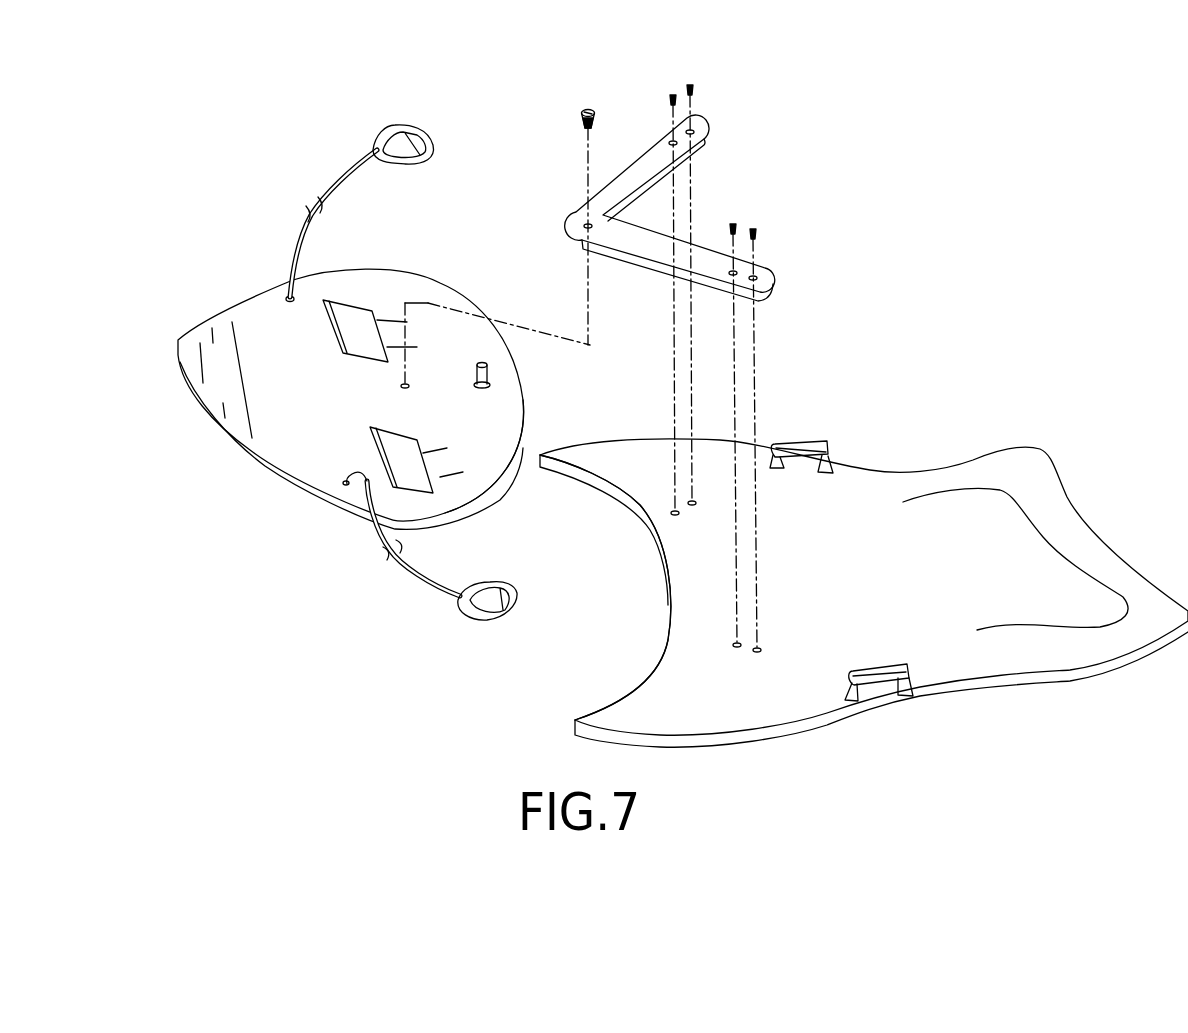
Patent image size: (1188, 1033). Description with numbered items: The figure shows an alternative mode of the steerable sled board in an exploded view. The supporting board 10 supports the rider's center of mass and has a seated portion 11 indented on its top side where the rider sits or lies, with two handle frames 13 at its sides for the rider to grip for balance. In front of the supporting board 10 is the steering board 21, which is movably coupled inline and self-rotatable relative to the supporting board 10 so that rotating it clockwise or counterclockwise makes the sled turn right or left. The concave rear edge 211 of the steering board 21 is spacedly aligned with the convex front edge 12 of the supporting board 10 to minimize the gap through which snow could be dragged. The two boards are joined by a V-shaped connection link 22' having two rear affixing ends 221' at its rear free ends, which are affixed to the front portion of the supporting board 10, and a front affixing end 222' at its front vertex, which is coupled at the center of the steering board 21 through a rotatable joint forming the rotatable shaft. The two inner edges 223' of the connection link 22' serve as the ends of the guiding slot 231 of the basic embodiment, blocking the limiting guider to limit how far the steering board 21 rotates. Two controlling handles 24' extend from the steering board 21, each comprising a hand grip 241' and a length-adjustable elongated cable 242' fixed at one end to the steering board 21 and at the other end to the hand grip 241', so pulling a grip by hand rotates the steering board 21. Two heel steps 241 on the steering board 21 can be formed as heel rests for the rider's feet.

The supporting board 10 is at (937, 473).
The seated portion 11 is at (1042, 560).
The convex front edge 12 is at (633, 603).
The handle frames 13 is at (784, 447).
The steering board 21 is at (284, 421).
The concave rear edge 211 is at (537, 438).
The guiding slot 231 is at (490, 365).
The heel steps 241 is at (453, 349).
The connection link 22' is at (729, 185).
The rear affixing end 221' is at (761, 345).
The front affixing end 222' is at (548, 228).
The inner edges 223' is at (684, 172).
The controlling handles 24' is at (380, 374).
The hand grip 241' is at (414, 383).
The elongated cable 242' is at (340, 393).